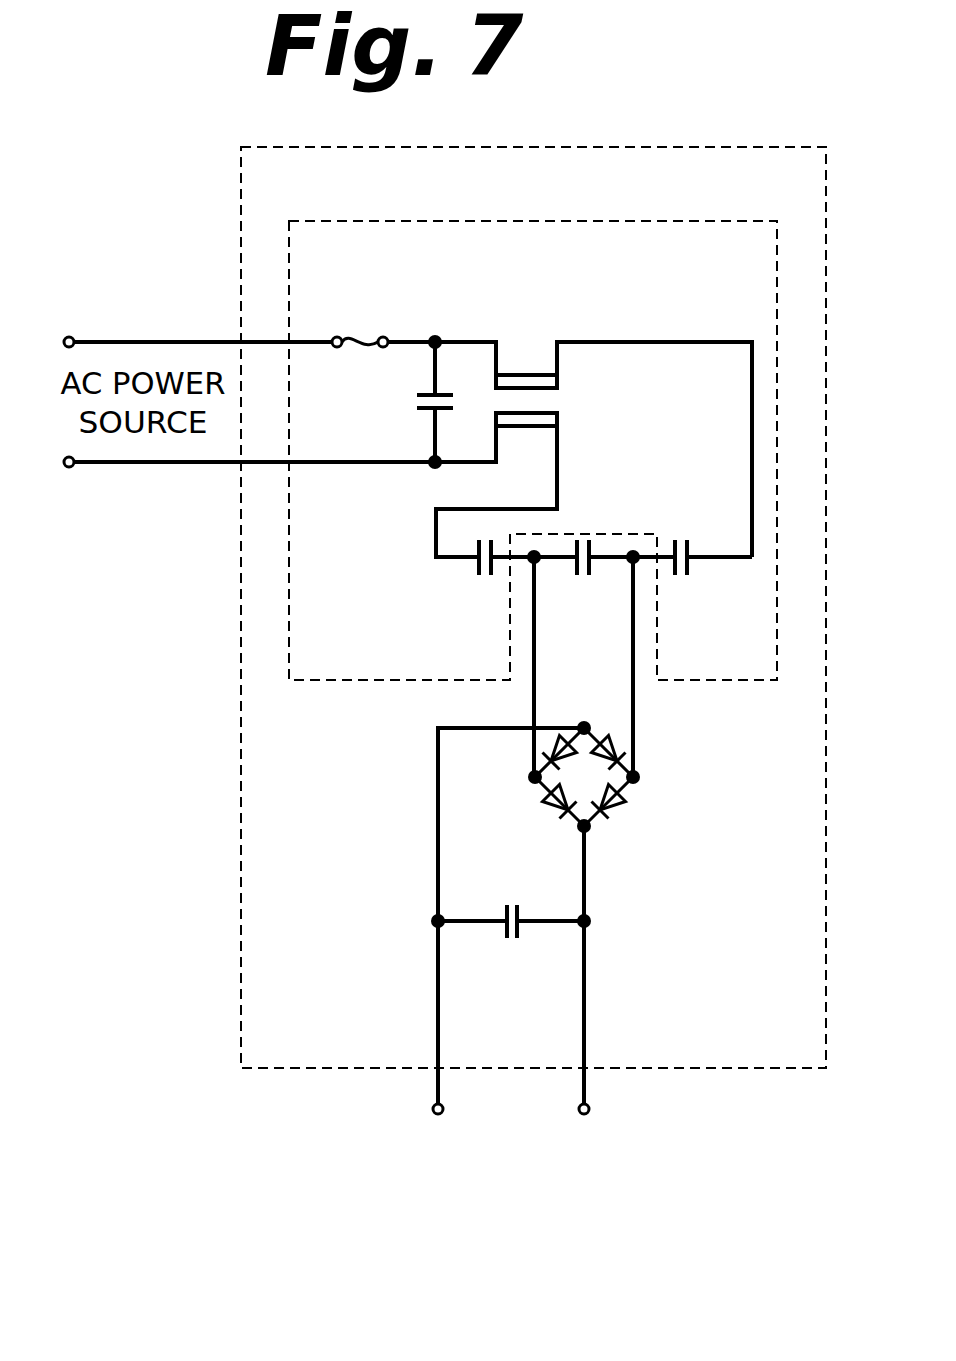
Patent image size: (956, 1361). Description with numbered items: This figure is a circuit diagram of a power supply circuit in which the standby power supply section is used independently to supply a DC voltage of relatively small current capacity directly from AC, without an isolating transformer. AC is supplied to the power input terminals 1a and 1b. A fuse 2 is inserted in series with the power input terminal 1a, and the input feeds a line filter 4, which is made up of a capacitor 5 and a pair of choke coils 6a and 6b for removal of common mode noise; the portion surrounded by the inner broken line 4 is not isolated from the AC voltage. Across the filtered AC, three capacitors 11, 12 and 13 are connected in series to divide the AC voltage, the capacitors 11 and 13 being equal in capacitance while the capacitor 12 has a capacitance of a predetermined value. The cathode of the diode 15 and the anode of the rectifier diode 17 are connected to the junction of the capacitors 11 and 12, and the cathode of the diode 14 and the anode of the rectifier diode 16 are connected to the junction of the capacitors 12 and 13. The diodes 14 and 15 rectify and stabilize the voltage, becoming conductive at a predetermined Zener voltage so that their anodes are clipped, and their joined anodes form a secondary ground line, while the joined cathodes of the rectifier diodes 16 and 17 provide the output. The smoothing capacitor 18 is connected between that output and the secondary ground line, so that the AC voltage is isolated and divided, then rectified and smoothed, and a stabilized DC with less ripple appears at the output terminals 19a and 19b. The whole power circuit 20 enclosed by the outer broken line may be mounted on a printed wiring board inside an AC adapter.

The power input terminal 1a is at (69, 336).
The power input terminal 1b is at (70, 470).
The fuse 2 is at (368, 332).
The line filter 4 is at (580, 222).
The capacitor 5 is at (452, 404).
The choke coil 6a is at (538, 375).
The choke coil 6b is at (540, 408).
The capacitor 11 is at (485, 577).
The capacitor 12 is at (583, 577).
The capacitor 13 is at (683, 577).
The diode 14 is at (626, 755).
The diode 15 is at (548, 748).
The rectifier diode 16 is at (630, 796).
The rectifier diode 17 is at (555, 810).
The smoothing capacitor 18 is at (513, 942).
The output terminal 19a is at (591, 1118).
The output terminal 19b is at (443, 1118).
The power circuit 20 is at (243, 852).